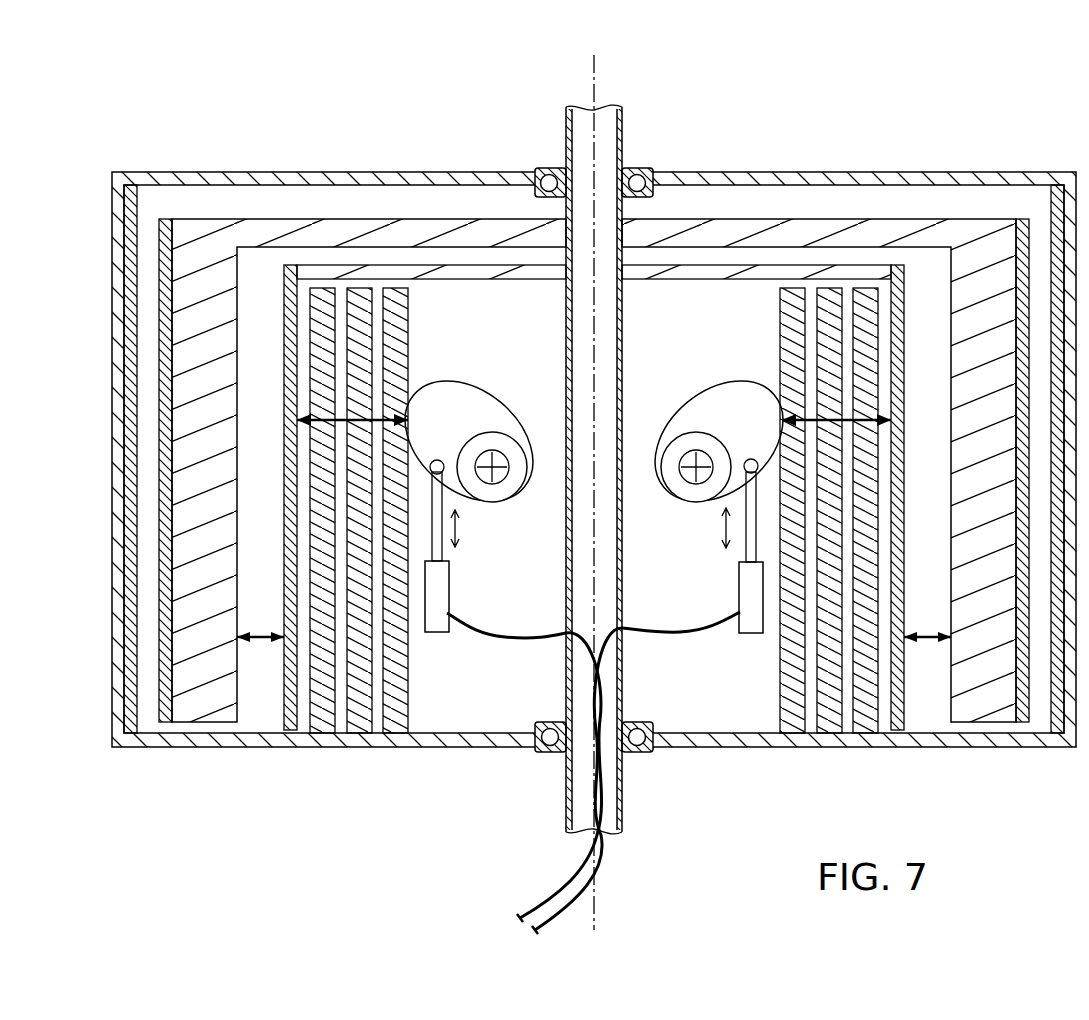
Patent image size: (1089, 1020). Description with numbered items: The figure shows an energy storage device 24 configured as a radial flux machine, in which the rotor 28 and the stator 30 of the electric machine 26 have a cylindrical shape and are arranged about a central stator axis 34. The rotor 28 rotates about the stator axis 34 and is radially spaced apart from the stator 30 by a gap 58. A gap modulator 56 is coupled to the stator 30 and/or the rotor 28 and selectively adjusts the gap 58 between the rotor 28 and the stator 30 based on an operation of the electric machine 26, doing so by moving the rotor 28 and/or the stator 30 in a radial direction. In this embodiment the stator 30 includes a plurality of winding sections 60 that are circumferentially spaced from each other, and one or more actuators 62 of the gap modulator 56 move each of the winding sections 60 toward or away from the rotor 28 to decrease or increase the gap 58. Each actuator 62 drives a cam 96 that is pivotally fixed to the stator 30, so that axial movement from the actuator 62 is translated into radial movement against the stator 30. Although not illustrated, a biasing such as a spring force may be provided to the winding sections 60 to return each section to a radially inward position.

The energy storage device 24 is at (212, 72).
The electric machine 26 is at (332, 176).
The rotor 28 is at (260, 232).
The stator 30 is at (340, 700).
The stator axis 34 is at (594, 923).
The gap modulator 56 is at (470, 712).
The gap 58 is at (257, 640).
The winding sections 60 is at (395, 345).
The actuator 62 is at (438, 592).
The cam 96 is at (487, 418).